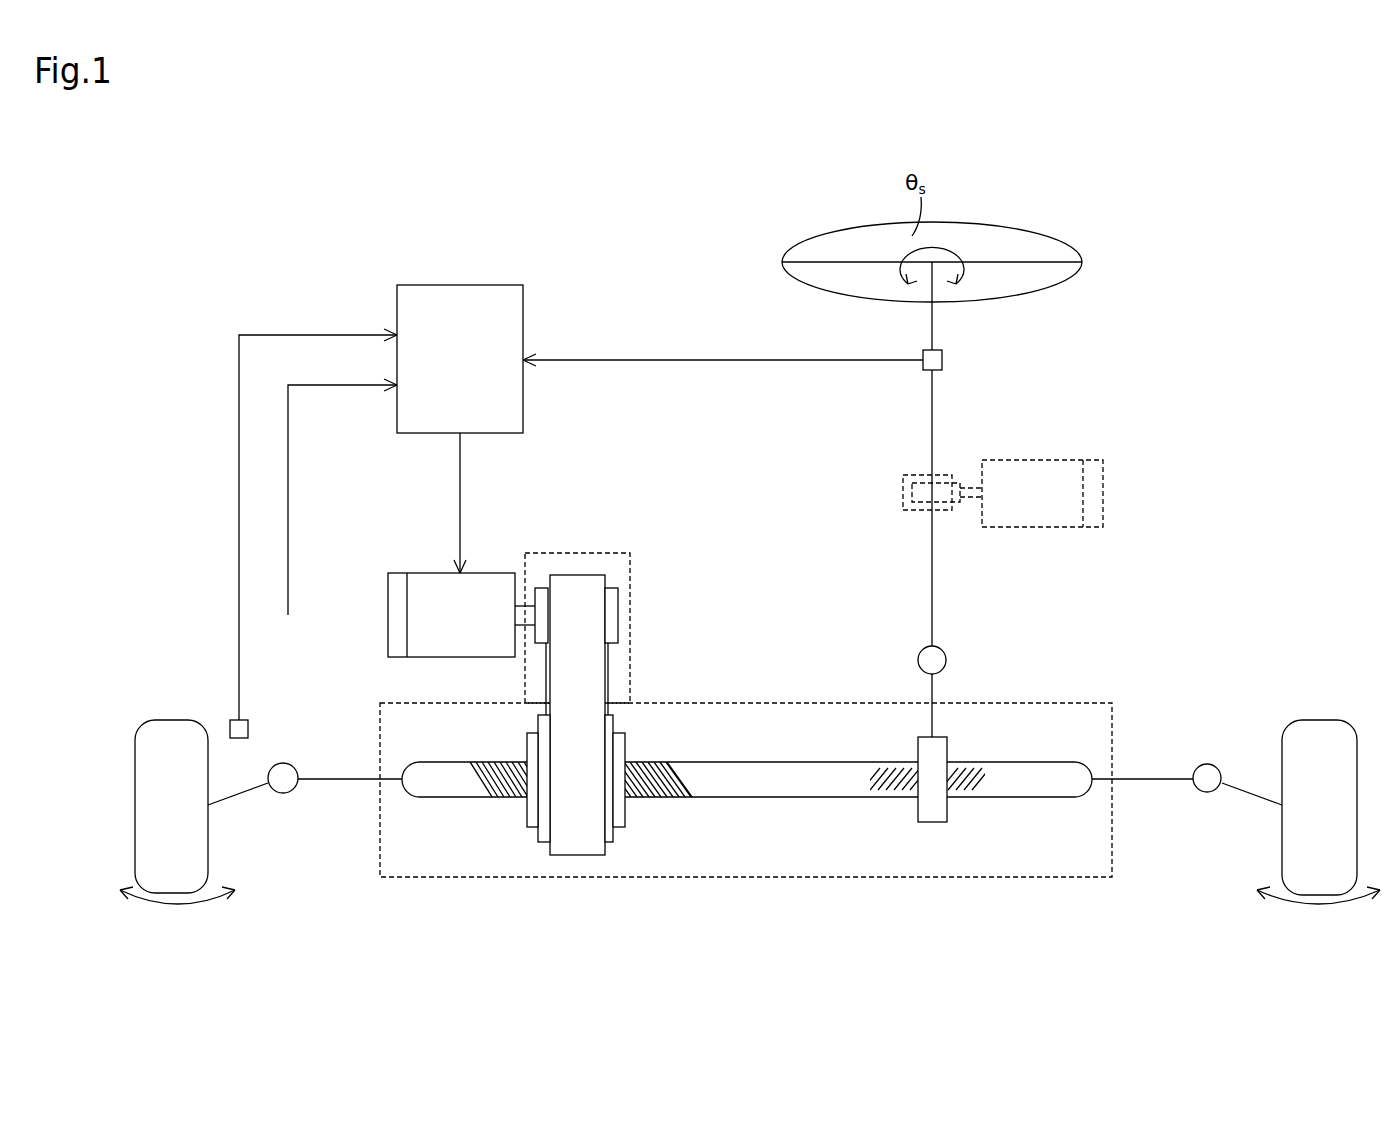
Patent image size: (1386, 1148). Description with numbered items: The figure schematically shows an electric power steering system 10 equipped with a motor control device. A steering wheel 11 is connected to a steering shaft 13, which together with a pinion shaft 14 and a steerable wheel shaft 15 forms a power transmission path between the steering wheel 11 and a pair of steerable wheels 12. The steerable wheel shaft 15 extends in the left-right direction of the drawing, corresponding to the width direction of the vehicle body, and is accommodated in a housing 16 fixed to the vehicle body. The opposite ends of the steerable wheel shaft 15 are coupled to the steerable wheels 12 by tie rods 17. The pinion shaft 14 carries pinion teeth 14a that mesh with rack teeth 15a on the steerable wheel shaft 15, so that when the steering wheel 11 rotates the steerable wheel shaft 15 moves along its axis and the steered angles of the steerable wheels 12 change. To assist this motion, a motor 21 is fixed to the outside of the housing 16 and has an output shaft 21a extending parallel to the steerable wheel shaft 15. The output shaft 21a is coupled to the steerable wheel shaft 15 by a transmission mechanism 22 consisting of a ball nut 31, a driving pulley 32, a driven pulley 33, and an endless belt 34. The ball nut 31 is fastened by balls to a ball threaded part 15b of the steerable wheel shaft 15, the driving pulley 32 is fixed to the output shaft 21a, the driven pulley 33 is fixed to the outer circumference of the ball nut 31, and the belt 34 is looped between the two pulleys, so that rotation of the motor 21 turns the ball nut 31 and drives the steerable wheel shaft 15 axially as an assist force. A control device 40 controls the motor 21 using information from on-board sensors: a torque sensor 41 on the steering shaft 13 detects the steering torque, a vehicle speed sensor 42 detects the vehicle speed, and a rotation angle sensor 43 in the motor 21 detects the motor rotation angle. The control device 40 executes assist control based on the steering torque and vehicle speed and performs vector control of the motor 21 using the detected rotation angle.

The electric power steering system 10 is at (1104, 224).
The steering wheel 11 is at (1021, 229).
The steerable wheels 12 is at (175, 720).
The steering shaft 13 is at (936, 314).
The pinion shaft 14 is at (930, 717).
The pinion teeth 14a is at (933, 823).
The steerable wheel shaft 15 is at (810, 798).
The rack teeth 15a is at (894, 791).
The ball threaded part 15b is at (469, 777).
The housing 16 is at (1047, 703).
The tie rods 17 is at (338, 781).
The motor 21 is at (1045, 460).
The output shaft 21a is at (522, 606).
The transmission mechanism 22 is at (618, 586).
The ball nut 31 is at (532, 828).
The driving pulley 32 is at (620, 606).
The driven pulley 33 is at (545, 843).
The endless belt 34 is at (610, 668).
The control device 40 is at (500, 285).
The torque sensor 41 is at (945, 359).
The vehicle speed sensor 42 is at (256, 730).
The rotation angle sensor 43 is at (392, 661).